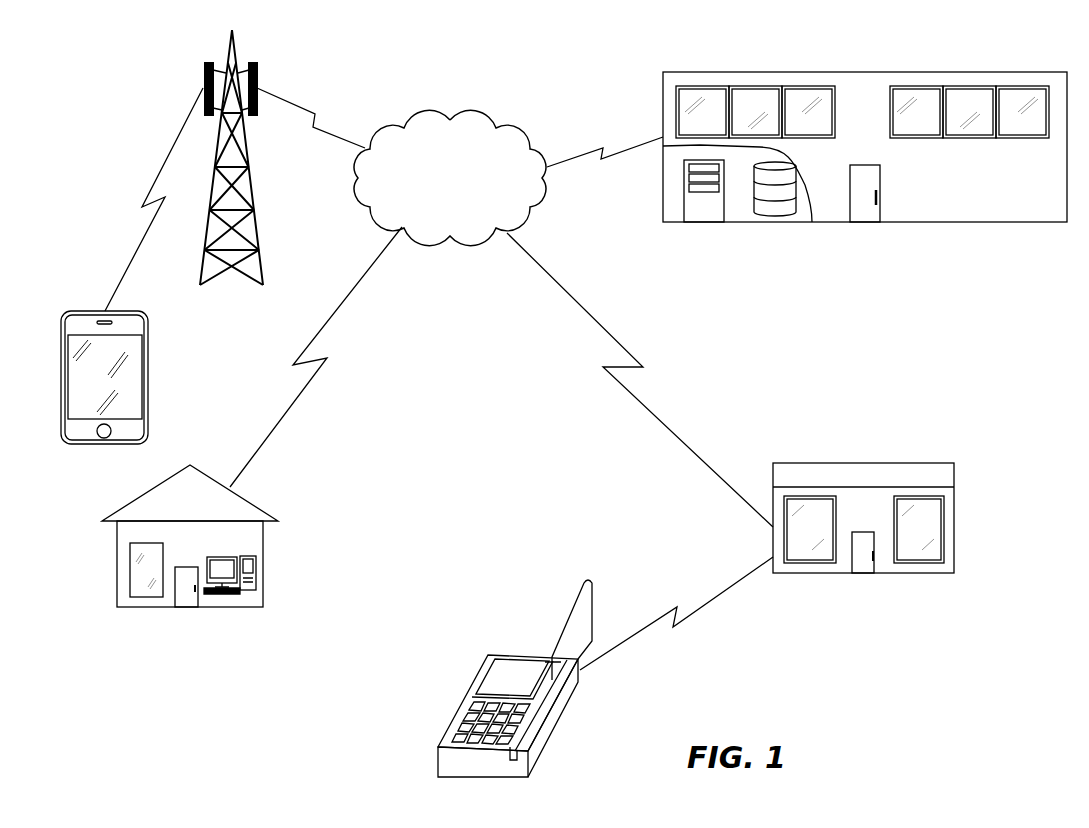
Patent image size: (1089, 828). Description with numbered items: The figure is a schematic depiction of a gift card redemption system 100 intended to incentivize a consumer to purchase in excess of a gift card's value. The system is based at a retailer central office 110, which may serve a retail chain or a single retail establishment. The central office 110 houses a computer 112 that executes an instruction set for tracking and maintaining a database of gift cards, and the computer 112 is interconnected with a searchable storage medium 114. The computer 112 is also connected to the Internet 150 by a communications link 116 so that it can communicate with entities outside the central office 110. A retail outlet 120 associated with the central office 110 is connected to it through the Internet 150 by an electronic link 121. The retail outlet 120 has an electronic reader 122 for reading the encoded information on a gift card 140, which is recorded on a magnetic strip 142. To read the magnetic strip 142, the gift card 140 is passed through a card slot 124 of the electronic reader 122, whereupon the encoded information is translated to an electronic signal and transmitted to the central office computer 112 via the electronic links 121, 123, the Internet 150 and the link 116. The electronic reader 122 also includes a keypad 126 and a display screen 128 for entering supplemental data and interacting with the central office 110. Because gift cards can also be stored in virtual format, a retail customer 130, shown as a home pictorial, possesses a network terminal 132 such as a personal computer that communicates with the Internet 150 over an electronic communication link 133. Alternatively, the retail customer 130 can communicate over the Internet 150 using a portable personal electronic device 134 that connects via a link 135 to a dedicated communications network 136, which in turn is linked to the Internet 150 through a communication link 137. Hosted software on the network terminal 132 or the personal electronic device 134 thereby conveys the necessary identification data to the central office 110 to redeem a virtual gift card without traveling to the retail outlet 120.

The gift card redemption system 100 is at (146, 81).
The retailer central office 110 is at (865, 141).
The computer 112 is at (705, 212).
The searchable storage medium 114 is at (773, 212).
The communications link 116 is at (566, 165).
The retail outlet 120 is at (954, 518).
The electronic link 121 is at (695, 450).
The electronic reader 122 is at (516, 692).
The electronic link 123 is at (710, 603).
The card slot 124 is at (505, 753).
The keypad 126 is at (452, 725).
The display screen 128 is at (500, 676).
The retail customer 130 is at (165, 554).
The network terminal 132 is at (222, 598).
The electronic communication link 133 is at (346, 300).
The portable personal electronic device 134 is at (150, 370).
The link 135 is at (136, 258).
The dedicated communications network 136 is at (237, 57).
The communication link 137 is at (333, 126).
The gift card 140 is at (570, 608).
The magnetic strip 142 is at (588, 638).
The Internet 150 is at (530, 133).